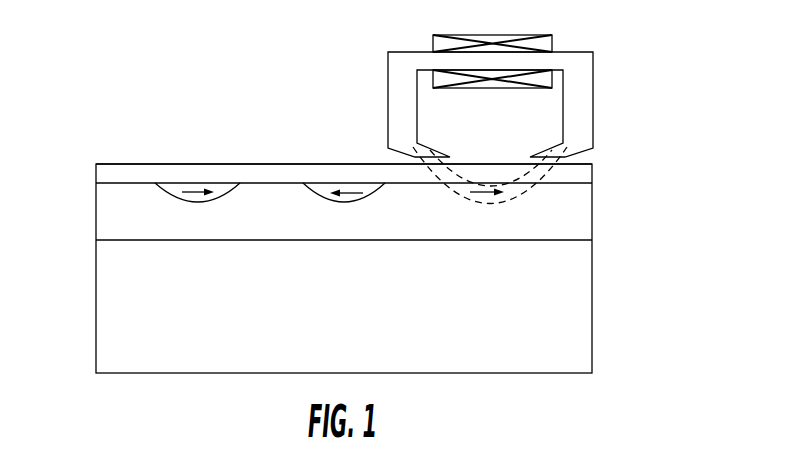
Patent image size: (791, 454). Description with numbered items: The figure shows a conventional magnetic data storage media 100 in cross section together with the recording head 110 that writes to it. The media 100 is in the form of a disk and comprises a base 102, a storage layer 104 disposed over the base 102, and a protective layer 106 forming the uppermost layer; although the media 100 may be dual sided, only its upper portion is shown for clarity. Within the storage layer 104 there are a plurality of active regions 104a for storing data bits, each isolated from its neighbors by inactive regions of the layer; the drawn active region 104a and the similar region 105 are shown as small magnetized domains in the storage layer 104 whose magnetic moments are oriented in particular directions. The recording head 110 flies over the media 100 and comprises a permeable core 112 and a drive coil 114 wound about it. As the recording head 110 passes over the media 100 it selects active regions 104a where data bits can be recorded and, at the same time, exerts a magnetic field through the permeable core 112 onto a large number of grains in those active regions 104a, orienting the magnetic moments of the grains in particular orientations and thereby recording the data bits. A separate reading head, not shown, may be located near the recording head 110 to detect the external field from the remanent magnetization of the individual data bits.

The data storage media 100 is at (55, 190).
The base 102 is at (95, 333).
The storage layer 104 is at (580, 228).
The active region 104a is at (197, 203).
The magnetized region (bit) 105 is at (367, 199).
The protective layer 106 is at (583, 176).
The recording head 110 is at (509, 119).
The permeable core 112 is at (400, 102).
The drive coil 114 is at (501, 89).